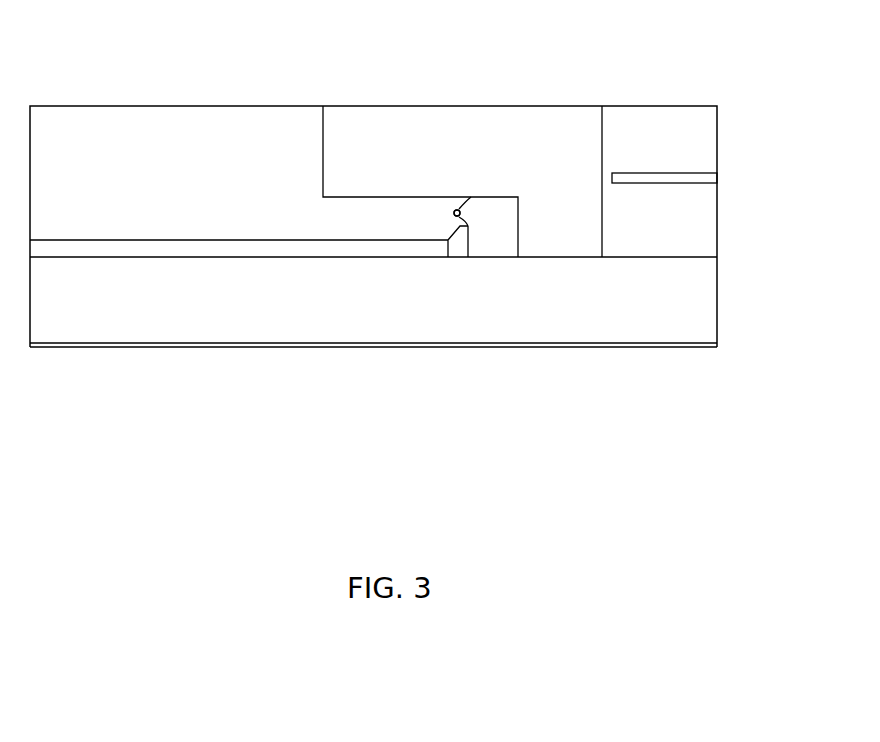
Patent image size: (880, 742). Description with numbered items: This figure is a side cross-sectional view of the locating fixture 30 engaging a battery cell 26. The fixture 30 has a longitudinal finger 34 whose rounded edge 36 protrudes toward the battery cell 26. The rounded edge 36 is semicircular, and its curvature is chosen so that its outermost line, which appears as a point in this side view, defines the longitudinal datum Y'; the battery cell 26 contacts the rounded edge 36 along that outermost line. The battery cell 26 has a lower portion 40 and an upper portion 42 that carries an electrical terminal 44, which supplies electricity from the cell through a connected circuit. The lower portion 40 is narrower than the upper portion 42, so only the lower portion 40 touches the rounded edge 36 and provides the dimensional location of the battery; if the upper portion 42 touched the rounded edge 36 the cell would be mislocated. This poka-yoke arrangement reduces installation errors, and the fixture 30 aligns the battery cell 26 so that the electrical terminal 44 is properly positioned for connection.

The battery cell 26 is at (169, 203).
The fixture 30 is at (513, 244).
The longitudinal finger 34 is at (500, 225).
The rounded edge 36 is at (458, 208).
The lower portion 40 is at (417, 225).
The upper portion 42 is at (500, 118).
The electrical terminal 44 is at (662, 178).
The longitudinal datum Y' is at (403, 120).